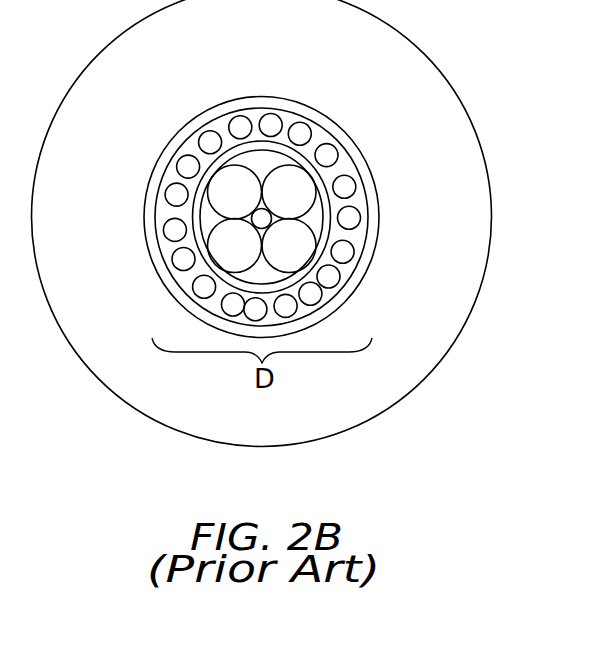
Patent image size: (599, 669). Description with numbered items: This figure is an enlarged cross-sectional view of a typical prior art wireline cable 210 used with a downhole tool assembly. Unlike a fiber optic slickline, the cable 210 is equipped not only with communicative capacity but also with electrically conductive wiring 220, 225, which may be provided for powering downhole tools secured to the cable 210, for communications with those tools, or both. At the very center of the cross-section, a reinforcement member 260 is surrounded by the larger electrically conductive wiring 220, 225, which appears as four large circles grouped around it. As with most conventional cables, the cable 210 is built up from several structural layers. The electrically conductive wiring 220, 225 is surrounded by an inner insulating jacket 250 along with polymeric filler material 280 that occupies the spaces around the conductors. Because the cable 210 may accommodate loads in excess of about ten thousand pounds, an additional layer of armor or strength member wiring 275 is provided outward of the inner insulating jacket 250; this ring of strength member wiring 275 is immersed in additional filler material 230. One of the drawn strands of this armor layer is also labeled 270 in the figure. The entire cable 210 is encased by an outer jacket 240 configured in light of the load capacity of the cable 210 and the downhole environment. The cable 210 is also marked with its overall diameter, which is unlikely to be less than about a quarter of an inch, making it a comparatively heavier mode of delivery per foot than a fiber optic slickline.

The cable 210 is at (178, 123).
The electrically conductive wiring 220 is at (235, 182).
The electrically conductive wiring 225 is at (220, 255).
The filler material 230 is at (290, 122).
The outer jacket 240 is at (325, 130).
The inner insulating jacket 250 is at (325, 205).
The reinforcement member 260 is at (263, 220).
The strength member 270 is at (343, 250).
The strength member wiring 275 is at (177, 193).
The polymeric filler material 280 is at (208, 216).